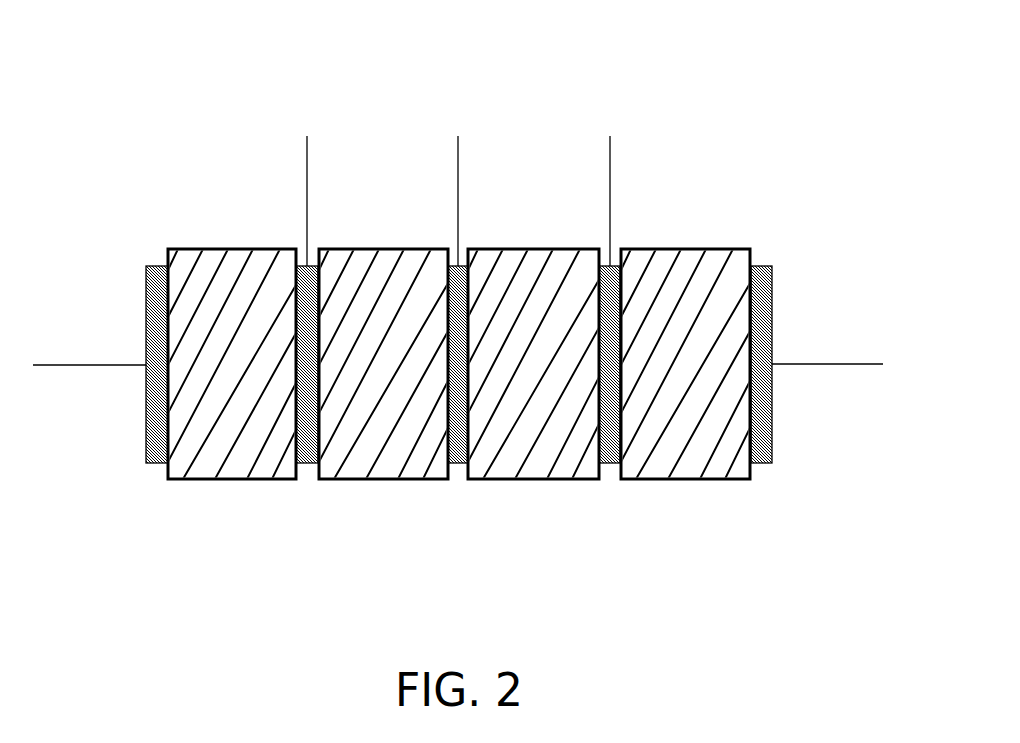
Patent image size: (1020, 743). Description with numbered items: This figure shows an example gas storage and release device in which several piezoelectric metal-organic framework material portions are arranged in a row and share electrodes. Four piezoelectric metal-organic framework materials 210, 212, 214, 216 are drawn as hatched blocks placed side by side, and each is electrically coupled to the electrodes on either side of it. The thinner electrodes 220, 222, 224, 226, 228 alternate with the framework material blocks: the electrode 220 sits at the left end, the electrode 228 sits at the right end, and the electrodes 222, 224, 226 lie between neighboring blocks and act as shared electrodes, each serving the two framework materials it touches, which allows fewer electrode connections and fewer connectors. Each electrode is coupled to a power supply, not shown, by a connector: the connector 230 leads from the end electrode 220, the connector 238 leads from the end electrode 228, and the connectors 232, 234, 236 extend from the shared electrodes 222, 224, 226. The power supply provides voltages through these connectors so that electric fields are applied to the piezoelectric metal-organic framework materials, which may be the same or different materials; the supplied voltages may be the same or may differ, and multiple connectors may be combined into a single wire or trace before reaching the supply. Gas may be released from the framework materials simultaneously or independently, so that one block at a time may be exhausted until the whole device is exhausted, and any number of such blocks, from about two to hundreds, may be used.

The piezoelectric metal-organic framework material 210 is at (180, 468).
The piezoelectric metal-organic framework material 212 is at (333, 468).
The piezoelectric metal-organic framework material 214 is at (485, 468).
The piezoelectric metal-organic framework material 216 is at (637, 468).
The electrode 220 is at (145, 427).
The electrode 222 is at (307, 463).
The electrode 224 is at (458, 463).
The electrode 226 is at (610, 463).
The electrode 228 is at (772, 427).
The connector 230 is at (119, 365).
The connector 232 is at (307, 176).
The connector 234 is at (458, 175).
The connector 236 is at (610, 175).
The connector 238 is at (813, 364).